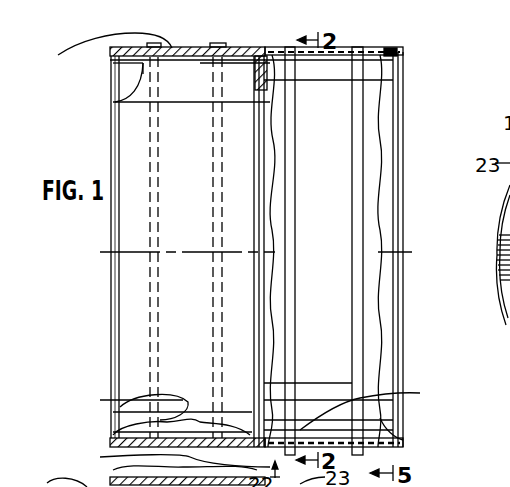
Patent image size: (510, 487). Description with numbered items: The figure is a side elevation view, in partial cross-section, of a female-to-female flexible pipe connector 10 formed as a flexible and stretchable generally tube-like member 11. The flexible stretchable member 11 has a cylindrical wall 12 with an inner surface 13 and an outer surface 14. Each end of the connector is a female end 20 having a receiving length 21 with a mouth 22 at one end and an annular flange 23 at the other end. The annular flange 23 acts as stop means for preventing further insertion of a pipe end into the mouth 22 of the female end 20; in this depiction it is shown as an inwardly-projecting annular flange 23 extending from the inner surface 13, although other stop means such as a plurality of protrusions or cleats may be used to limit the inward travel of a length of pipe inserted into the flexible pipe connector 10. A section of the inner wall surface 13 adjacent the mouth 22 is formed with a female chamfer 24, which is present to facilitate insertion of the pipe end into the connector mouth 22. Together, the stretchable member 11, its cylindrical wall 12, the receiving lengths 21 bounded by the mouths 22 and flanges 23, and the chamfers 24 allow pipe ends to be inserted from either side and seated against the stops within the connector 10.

The flexible pipe connector 10 is at (94, 36).
The flexible stretchable member 11 is at (320, 118).
The cylindrical wall 12 is at (157, 48).
The inner surface 13 is at (115, 102).
The outer surface 14 is at (105, 51).
The female end 20 is at (364, 38).
The receiving length 21 is at (115, 401).
The mouth 22 is at (106, 225).
The annular flange 23 is at (270, 63).
The female chamfer 24 is at (112, 92).